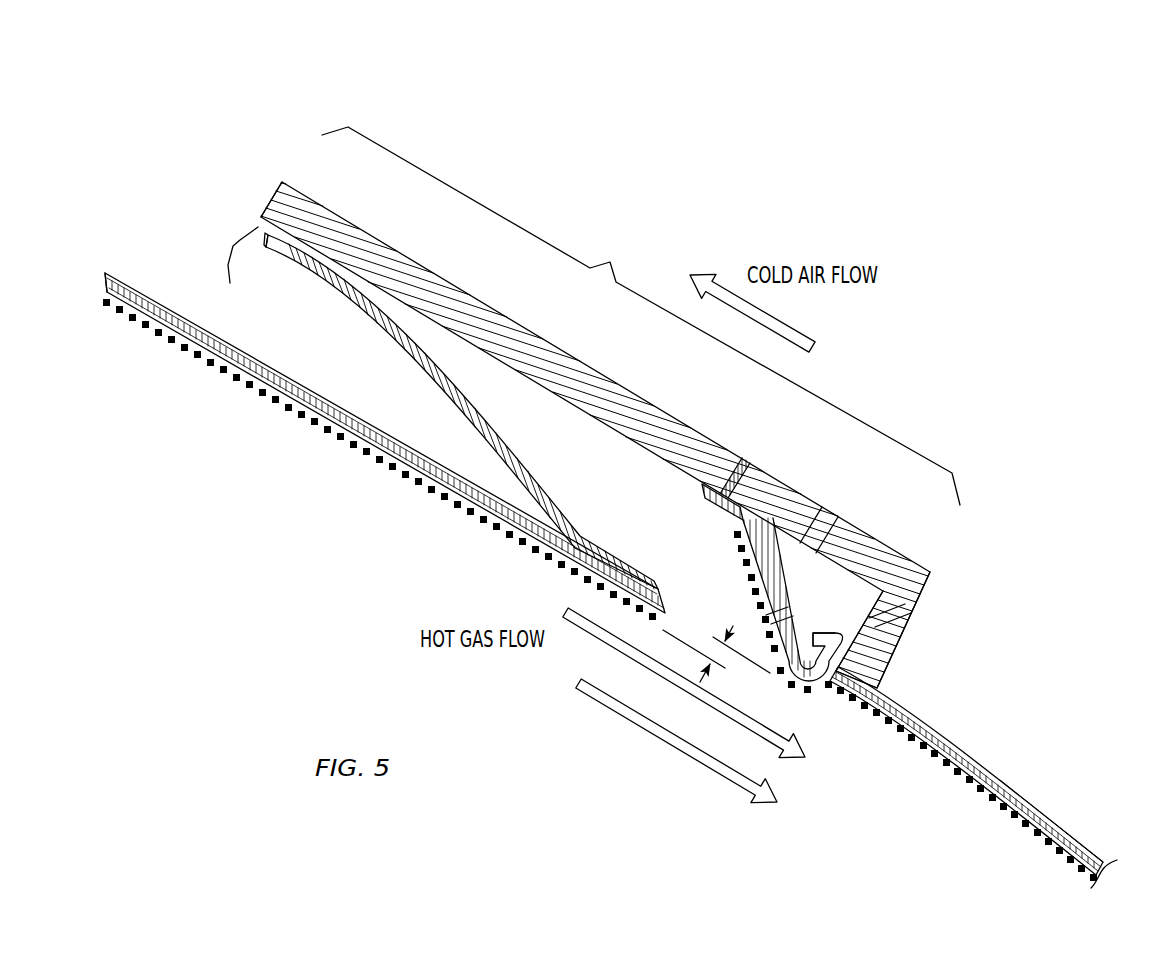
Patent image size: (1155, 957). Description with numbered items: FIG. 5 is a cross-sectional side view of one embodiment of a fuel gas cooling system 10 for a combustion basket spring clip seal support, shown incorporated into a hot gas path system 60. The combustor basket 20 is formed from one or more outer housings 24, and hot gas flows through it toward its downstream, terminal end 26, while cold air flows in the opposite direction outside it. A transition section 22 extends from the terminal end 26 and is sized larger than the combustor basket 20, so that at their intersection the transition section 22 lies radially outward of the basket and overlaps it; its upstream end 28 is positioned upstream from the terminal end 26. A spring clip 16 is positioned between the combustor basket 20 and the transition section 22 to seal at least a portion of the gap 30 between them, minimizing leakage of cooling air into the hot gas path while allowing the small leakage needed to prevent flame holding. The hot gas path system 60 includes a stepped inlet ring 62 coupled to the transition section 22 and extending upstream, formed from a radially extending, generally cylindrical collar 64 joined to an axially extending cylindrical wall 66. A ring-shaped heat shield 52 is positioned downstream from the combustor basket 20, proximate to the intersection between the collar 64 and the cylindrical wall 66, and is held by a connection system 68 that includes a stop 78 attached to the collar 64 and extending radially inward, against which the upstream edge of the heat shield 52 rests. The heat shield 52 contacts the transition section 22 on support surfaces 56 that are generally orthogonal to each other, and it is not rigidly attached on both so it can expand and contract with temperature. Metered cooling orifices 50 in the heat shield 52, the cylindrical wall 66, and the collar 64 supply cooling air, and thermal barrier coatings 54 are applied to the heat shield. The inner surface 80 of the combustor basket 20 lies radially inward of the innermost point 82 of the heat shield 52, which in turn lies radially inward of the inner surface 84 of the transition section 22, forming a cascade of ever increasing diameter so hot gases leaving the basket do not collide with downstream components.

The fuel gas cooling system 10 is at (194, 128).
The spring clip 16 is at (262, 228).
The combustor basket 20 is at (168, 335).
The transition section 22 is at (965, 788).
The outer housing 24 is at (106, 274).
The downstream terminal end 26 is at (662, 623).
The transition section upstream end 28 is at (271, 192).
The gap 30 is at (239, 248).
The metered cooling orifice 50 is at (809, 561).
The heat shield 52 is at (788, 667).
The thermal barrier coating 54 is at (410, 488).
The support surface 56 is at (762, 527).
The hot gas path system 60 is at (677, 250).
The stepped inlet ring 62 is at (641, 316).
The radially extending cylindrical collar 64 is at (508, 318).
The axially extending cylindrical wall 66 is at (880, 678).
The connection system 68 is at (745, 455).
The stop 78 is at (723, 508).
The inner surface of combustor basket 80 is at (345, 443).
The innermost point of heat shield 82 is at (790, 692).
The inner surface of transition section 84 is at (948, 770).